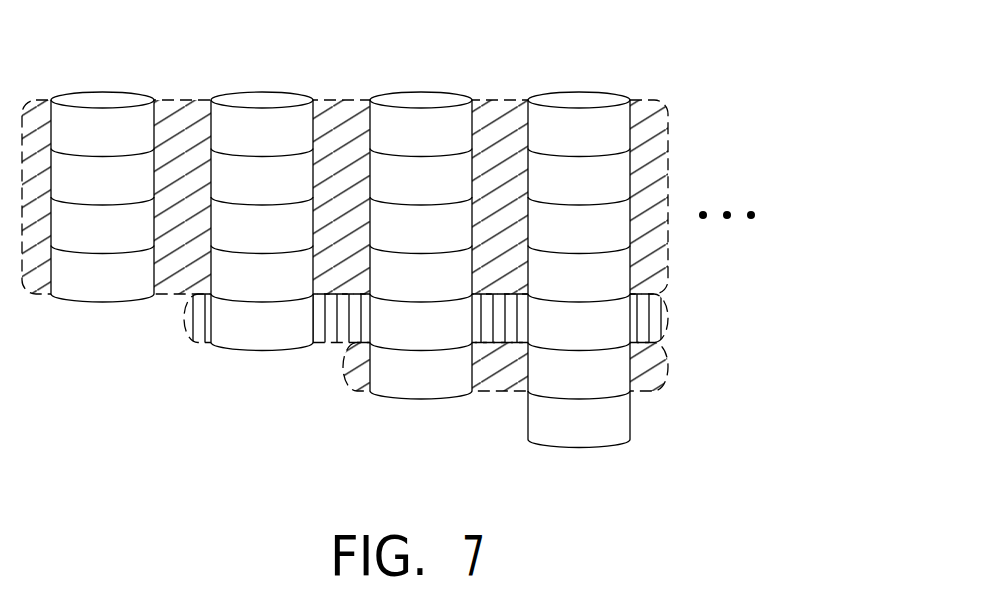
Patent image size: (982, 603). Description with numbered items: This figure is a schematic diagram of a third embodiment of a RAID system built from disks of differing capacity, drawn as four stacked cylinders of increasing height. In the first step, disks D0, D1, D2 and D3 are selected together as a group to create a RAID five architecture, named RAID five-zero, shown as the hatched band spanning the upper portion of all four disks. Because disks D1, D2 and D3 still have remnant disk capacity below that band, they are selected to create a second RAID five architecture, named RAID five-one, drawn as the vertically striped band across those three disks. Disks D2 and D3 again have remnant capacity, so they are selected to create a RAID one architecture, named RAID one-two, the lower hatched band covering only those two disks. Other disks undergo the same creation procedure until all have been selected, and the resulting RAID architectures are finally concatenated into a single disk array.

The disk D0 is at (107, 97).
The disk D1 is at (263, 97).
The disk D2 is at (423, 97).
The disk D3 is at (583, 97).